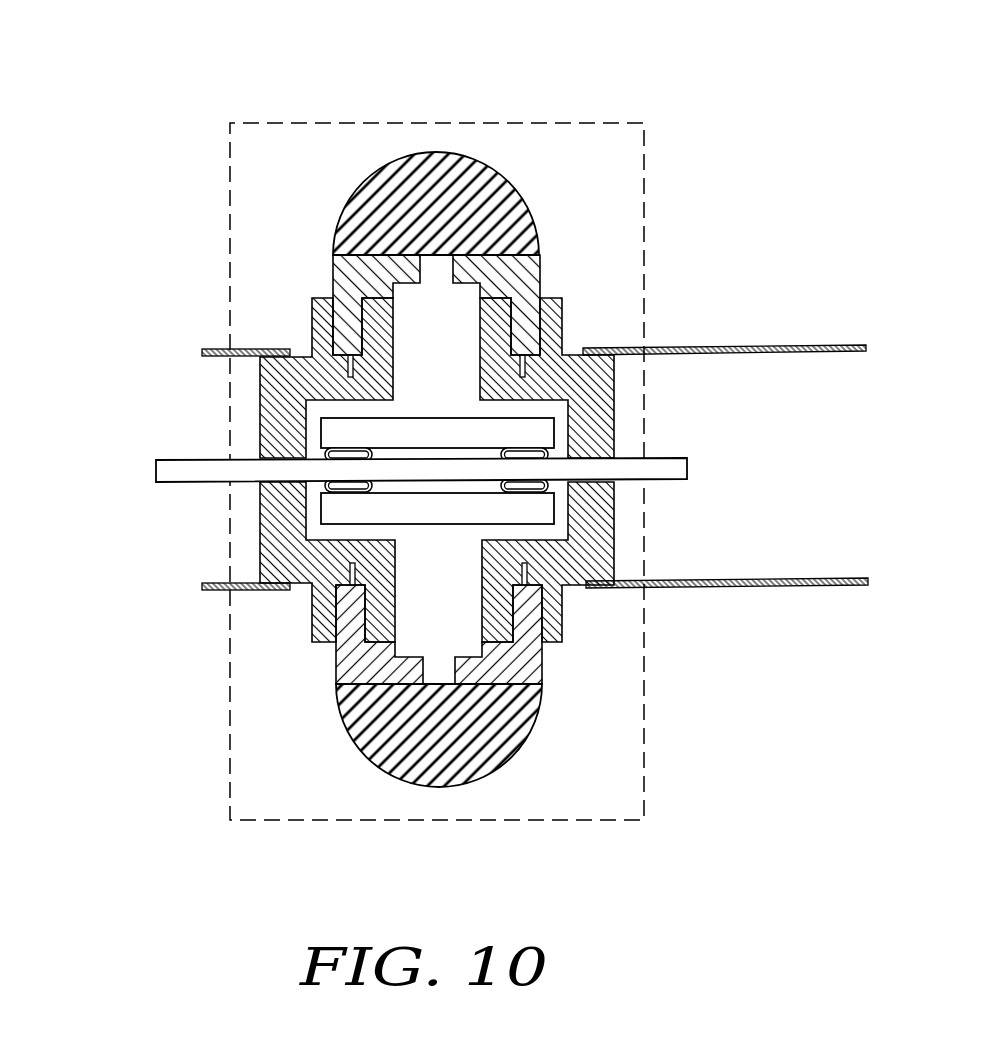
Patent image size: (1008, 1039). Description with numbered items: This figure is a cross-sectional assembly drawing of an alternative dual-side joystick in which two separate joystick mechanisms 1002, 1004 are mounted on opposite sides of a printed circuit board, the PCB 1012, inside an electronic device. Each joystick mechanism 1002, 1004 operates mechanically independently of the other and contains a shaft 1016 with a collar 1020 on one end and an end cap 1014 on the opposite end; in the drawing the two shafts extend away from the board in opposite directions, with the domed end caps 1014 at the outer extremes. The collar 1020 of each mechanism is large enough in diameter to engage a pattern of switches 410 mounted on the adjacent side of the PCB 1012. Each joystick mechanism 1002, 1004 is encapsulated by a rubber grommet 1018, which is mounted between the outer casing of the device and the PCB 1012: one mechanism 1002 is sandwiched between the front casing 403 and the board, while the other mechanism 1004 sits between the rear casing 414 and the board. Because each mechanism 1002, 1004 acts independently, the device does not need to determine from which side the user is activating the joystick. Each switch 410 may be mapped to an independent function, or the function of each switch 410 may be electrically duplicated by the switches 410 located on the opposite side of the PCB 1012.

The joystick mechanism 1002 is at (627, 170).
The joystick mechanism 1004 is at (245, 772).
The PCB 1012 is at (678, 455).
The end cap 1014 is at (467, 157).
The shaft 1016 is at (415, 313).
The rubber grommet 1018 is at (300, 357).
The collar 1020 is at (330, 430).
The front casing 403 is at (698, 348).
The rear casing 414 is at (775, 580).
The switches 410 is at (550, 452).